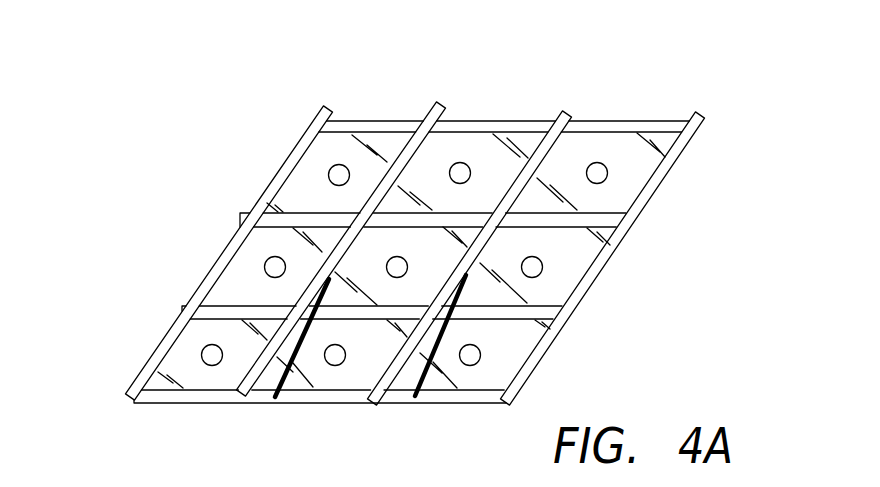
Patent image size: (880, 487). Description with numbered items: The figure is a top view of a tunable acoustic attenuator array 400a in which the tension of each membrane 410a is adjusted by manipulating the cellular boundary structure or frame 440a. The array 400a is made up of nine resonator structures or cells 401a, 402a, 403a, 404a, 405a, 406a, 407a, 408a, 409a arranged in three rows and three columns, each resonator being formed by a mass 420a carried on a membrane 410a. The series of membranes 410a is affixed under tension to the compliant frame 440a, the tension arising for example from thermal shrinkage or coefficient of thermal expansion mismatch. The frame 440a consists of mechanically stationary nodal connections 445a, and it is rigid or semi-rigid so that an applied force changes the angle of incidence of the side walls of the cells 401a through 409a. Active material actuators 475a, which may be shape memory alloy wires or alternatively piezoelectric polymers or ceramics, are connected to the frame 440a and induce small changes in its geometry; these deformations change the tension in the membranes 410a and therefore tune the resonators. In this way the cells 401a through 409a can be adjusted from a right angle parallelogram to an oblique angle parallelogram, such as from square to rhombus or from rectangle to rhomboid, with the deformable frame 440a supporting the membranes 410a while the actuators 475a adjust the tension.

The tunable acoustic attenuator array 400a is at (267, 95).
The resonator cell 401a is at (307, 172).
The resonator cell 402a is at (429, 145).
The resonator cell 403a is at (634, 184).
The resonator cell 404a is at (245, 265).
The resonator cell 405a is at (358, 234).
The resonator cell 406a is at (579, 253).
The resonator cell 407a is at (182, 355).
The resonator cell 408a is at (310, 326).
The resonator cell 409a is at (514, 350).
The membrane 410a is at (526, 143).
The mass 420a is at (470, 172).
The frame 440a is at (668, 122).
The nodal connection 445a is at (313, 118).
The active material actuator 475a is at (423, 381).